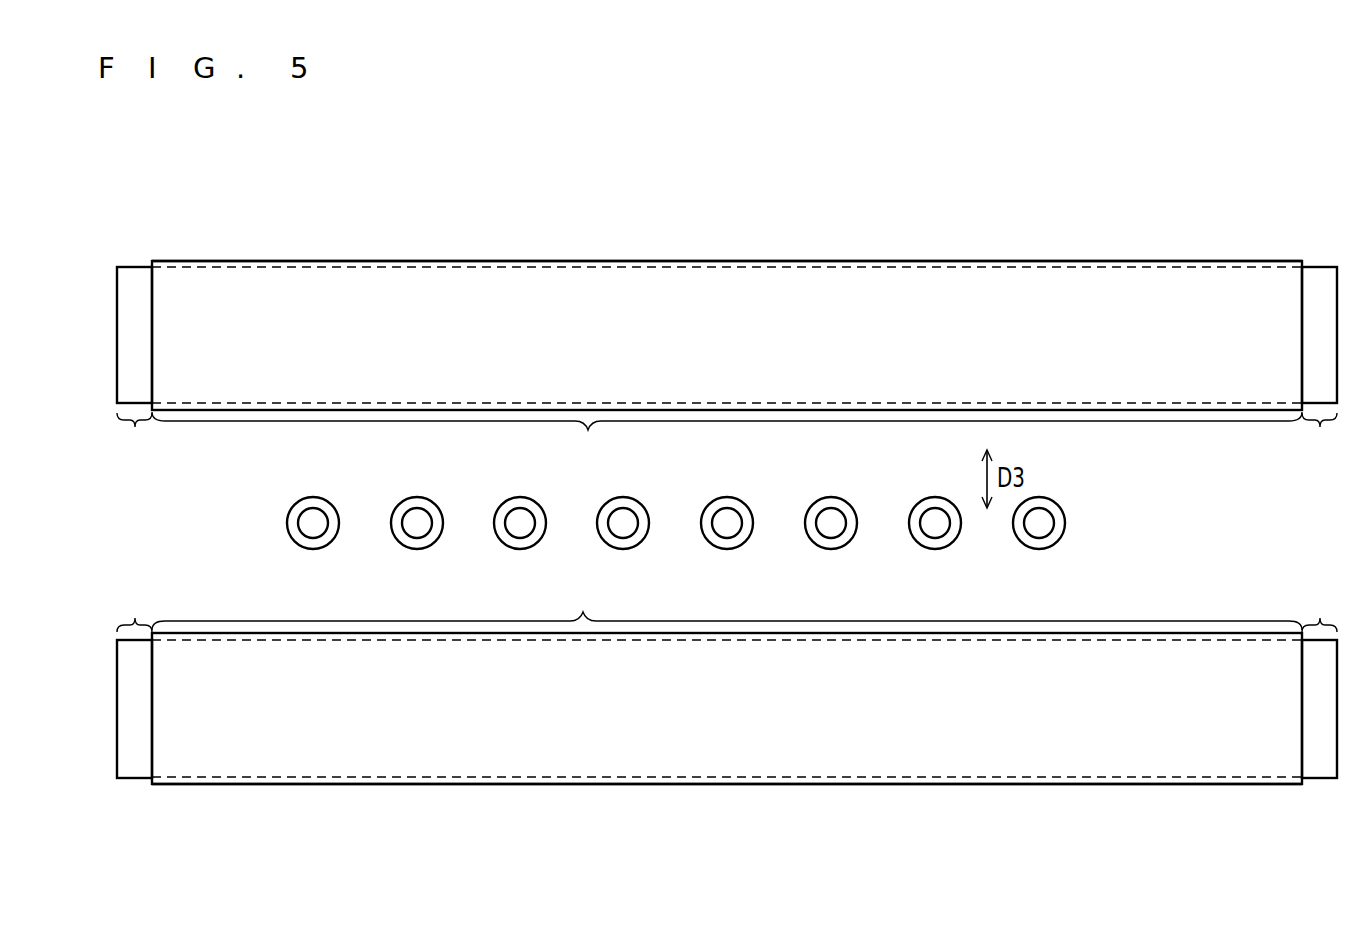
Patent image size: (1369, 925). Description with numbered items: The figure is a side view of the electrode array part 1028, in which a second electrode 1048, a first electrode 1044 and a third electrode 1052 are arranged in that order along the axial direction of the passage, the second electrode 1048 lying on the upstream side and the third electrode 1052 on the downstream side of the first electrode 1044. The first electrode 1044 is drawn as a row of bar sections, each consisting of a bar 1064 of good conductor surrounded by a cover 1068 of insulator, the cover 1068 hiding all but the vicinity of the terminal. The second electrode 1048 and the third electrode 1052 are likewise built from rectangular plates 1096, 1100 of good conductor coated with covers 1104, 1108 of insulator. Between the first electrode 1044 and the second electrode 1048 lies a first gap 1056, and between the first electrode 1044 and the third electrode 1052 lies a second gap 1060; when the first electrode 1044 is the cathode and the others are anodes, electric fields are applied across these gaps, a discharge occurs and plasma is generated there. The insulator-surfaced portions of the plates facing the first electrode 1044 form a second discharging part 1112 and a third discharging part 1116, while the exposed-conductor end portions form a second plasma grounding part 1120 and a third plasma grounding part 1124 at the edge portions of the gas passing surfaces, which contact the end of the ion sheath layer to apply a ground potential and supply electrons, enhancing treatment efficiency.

The electrode array part 1028 is at (1100, 200).
The first electrode 1044 is at (1022, 545).
The second electrode 1048 is at (890, 262).
The third electrode 1052 is at (889, 785).
The first gap 1056 is at (727, 461).
The second gap 1060 is at (722, 577).
The bar 1064 is at (314, 517).
The cover 1068 is at (300, 509).
The rectangular plate 1096 is at (132, 275).
The rectangular plate 1100 is at (131, 770).
The cover 1104 is at (285, 284).
The cover 1108 is at (285, 762).
The second discharging part 1112 is at (727, 441).
The third discharging part 1116 is at (727, 603).
The second plasma grounding part 1120 is at (728, 363).
The third plasma grounding part 1124 is at (727, 681).